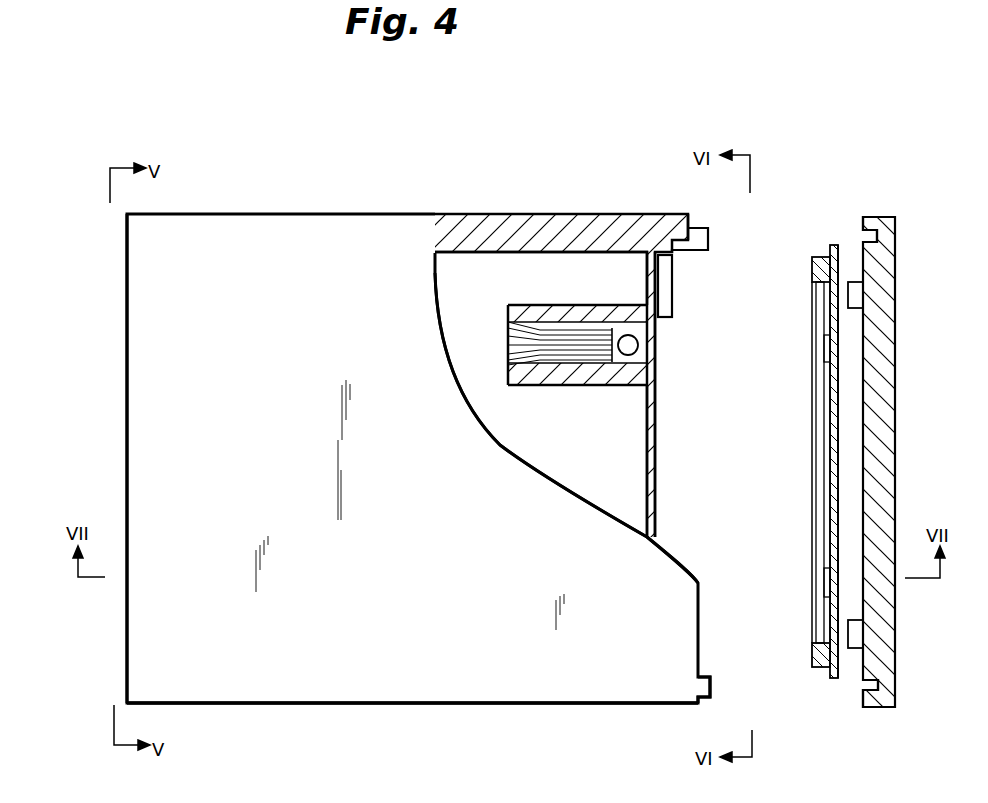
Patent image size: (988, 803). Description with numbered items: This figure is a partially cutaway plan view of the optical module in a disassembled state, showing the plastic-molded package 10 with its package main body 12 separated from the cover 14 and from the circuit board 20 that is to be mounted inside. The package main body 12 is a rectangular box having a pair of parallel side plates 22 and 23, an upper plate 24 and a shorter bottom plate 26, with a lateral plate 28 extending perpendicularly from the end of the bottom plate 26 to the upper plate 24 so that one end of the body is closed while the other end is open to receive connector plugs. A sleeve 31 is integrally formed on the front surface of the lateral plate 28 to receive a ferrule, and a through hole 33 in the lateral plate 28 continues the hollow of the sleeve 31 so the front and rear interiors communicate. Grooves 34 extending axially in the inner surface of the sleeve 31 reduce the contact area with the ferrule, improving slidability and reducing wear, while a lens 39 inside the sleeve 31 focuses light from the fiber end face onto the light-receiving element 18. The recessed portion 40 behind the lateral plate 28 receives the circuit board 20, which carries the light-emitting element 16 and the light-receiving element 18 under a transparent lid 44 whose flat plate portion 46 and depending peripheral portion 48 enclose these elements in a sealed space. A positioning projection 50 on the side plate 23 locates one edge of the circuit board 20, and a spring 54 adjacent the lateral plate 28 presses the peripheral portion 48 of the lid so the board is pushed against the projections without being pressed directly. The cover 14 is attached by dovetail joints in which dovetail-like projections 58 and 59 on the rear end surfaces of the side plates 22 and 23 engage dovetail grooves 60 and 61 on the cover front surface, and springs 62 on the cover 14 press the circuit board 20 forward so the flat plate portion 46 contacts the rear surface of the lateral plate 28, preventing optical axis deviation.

The package 10 is at (325, 192).
The package main body 12 is at (127, 330).
The cover 14 is at (890, 455).
The light-emitting element 16 is at (826, 590).
The light-receiving element 18 is at (830, 350).
The circuit board 20 is at (842, 397).
The side plate 22 is at (515, 705).
The side plate 23 is at (570, 222).
The upper plate 24 is at (332, 680).
The bottom plate 26 is at (528, 265).
The lateral plate 28 is at (658, 472).
The sleeve 31 is at (537, 320).
The through hole 33 is at (652, 347).
The grooves 34 is at (508, 348).
The lens 39 is at (640, 354).
The recessed portion 40 is at (670, 517).
The transparent lid 44 is at (812, 485).
The flat plate portion 46 is at (812, 418).
The peripheral portion 48 is at (825, 265).
The positioning projection 50 is at (697, 250).
The spring 54 is at (672, 290).
The dovetail-like projection 58 is at (705, 700).
The dovetail-like projection 59 is at (688, 228).
The dovetail groove 60 is at (870, 683).
The dovetail groove 61 is at (866, 236).
The spring 62 is at (860, 295).